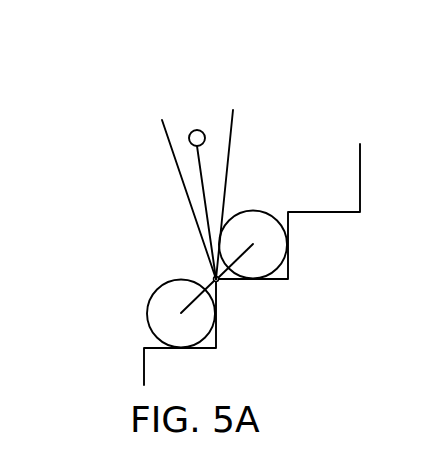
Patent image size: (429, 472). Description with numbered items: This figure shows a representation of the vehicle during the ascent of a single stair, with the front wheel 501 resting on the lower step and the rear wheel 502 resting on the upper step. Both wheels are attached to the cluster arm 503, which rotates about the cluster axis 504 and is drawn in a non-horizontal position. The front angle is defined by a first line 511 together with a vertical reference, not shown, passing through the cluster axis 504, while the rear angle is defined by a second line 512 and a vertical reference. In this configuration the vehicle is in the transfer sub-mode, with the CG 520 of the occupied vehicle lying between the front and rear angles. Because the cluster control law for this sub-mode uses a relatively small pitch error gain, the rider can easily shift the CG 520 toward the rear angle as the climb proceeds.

The front wheel 501 is at (147, 313).
The rear wheel 502 is at (262, 208).
The cluster arm 503 is at (239, 258).
The cluster axis 504 is at (217, 285).
The first line 511 is at (170, 151).
The second line 512 is at (233, 136).
The CG 520 is at (198, 126).